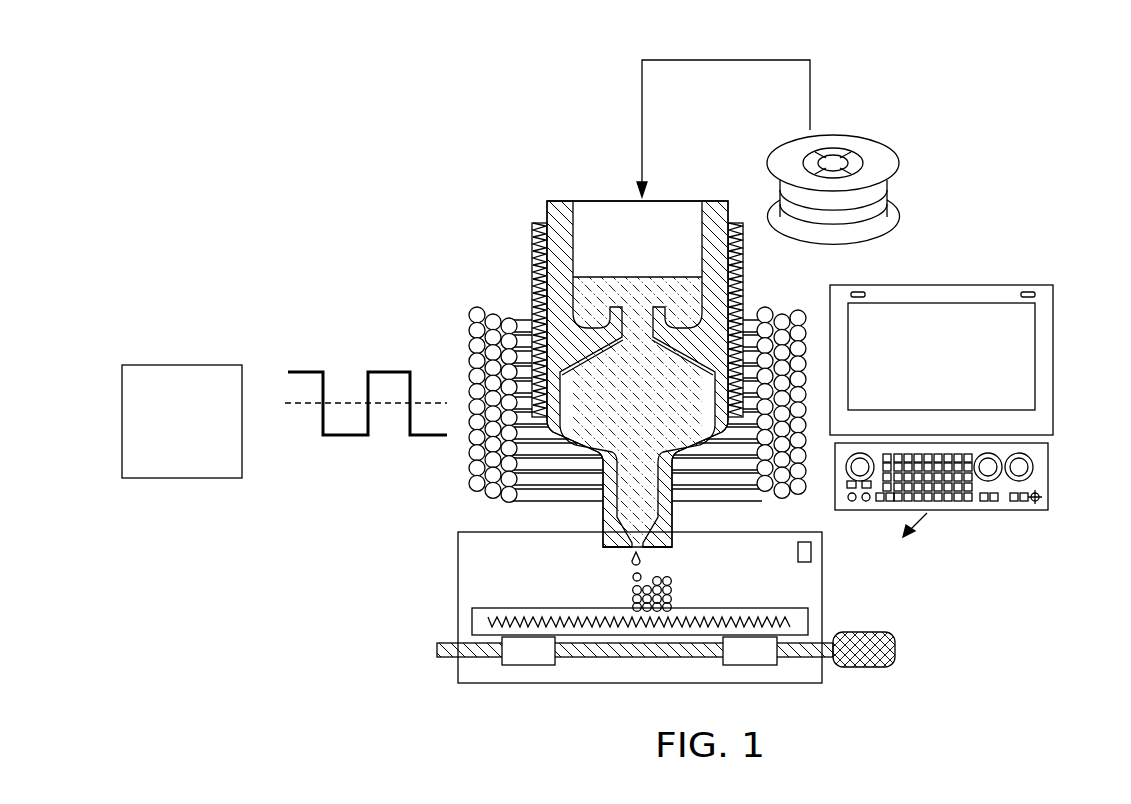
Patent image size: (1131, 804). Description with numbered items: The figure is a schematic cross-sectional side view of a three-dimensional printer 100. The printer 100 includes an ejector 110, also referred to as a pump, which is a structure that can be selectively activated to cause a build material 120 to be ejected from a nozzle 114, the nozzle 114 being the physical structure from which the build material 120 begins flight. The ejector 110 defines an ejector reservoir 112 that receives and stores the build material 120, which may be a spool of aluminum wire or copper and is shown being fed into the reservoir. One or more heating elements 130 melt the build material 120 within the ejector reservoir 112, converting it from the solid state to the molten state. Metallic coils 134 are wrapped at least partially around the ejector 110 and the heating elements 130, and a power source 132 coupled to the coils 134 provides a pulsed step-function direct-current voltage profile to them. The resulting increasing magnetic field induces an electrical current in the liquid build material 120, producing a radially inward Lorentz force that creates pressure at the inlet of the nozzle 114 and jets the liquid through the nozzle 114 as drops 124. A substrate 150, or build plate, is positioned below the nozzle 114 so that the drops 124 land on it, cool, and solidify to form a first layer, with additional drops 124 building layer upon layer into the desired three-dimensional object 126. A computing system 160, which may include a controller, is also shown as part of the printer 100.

The 3D printer 100 is at (227, 143).
The ejector 110 is at (490, 208).
The ejector reservoir 112 is at (590, 212).
The nozzle 114 is at (623, 550).
The build material 120 is at (850, 130).
The drops 124 is at (646, 556).
The 3D object 126 is at (668, 578).
The heating elements 130 is at (746, 282).
The power source 132 is at (190, 478).
The metallic coils 134 is at (470, 312).
The substrate 150 is at (472, 622).
The computing system 160 is at (1048, 473).